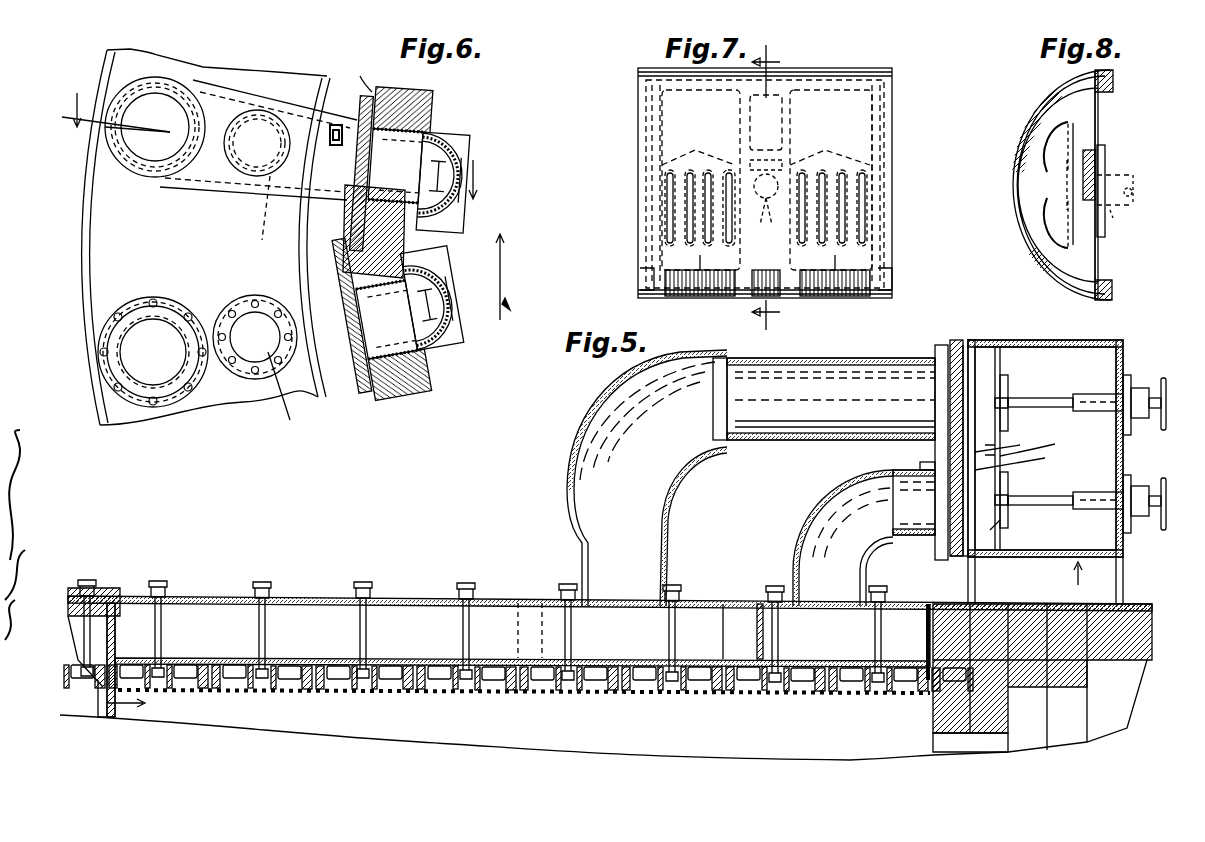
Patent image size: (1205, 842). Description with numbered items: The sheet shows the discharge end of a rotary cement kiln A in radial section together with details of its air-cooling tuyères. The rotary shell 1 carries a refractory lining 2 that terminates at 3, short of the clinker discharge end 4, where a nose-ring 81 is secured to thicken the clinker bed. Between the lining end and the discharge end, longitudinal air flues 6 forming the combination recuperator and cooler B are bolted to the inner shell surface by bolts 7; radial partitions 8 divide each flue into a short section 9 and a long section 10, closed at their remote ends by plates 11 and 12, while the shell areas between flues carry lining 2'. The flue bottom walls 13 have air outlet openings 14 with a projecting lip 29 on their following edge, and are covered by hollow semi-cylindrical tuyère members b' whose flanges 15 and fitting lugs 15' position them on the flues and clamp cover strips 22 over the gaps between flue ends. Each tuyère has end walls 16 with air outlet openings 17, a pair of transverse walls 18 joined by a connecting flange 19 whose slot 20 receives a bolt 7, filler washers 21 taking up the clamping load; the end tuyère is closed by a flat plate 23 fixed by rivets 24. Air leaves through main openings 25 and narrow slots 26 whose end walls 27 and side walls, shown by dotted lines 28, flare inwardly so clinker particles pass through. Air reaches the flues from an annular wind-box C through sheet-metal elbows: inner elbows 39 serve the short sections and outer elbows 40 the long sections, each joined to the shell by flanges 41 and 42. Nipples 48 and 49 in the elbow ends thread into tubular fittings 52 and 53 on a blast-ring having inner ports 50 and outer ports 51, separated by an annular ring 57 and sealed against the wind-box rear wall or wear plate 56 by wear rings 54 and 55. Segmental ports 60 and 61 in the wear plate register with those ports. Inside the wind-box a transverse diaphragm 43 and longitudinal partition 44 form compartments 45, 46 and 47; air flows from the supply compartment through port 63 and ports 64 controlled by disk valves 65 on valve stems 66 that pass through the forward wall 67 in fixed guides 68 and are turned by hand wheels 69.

In FIG. 6, the rotary shell 1 is at (365, 75).
In FIG. 5, the rotary shell 1 is at (1140, 600).
In FIG. 5, the lining 2 is at (1083, 705).
In FIG. 6, the lining 2' is at (395, 252).
In FIG. 5, the end of lining 3 is at (933, 725).
In FIG. 5, the clinker discharge end 4 is at (110, 712).
In FIG. 6, the air flues 6 is at (352, 235).
In FIG. 5, the air flues 6 is at (410, 668).
In FIG. 6, the bolts 7 is at (378, 220).
In FIG. 7, the bolts 7 is at (765, 234).
In FIG. 8, the bolts 7 is at (1122, 232).
In FIG. 5, the bolts 7 is at (258, 632).
In FIG. 7, the radial partitions 8 is at (771, 194).
In FIG. 5, the radial partitions 8 is at (730, 633).
In FIG. 5, the short flue sections 9 is at (770, 664).
In FIG. 5, the long flue sections 10 is at (698, 664).
In FIG. 5, the plate 11 is at (928, 635).
In FIG. 5, the plate 12 is at (130, 634).
In FIG. 5, the bottom walls 13 is at (440, 630).
In FIG. 6, the air outlet openings 14 is at (467, 160).
In FIG. 7, the flanges 15 is at (765, 170).
In FIG. 8, the flanges 15 is at (1085, 178).
In FIG. 8, the fitting lugs 15' is at (1133, 181).
In FIG. 6, the end walls 16 is at (463, 203).
In FIG. 7, the end walls 16 is at (652, 150).
In FIG. 8, the end walls 16 is at (1068, 110).
In FIG. 5, the end walls 16 is at (190, 690).
In FIG. 6, the air outlet openings 17 is at (440, 228).
In FIG. 8, the air outlet openings 17 is at (1052, 185).
In FIG. 7, the transverse walls 18 is at (740, 128).
In FIG. 8, the transverse walls 18 is at (1098, 120).
In FIG. 5, the transverse walls 18 is at (478, 664).
In FIG. 7, the connecting flange 19 is at (766, 132).
In FIG. 8, the connecting flange 19 is at (1100, 140).
In FIG. 7, the slot 20 is at (766, 219).
In FIG. 8, the slot 20 is at (1082, 190).
In FIG. 8, the filler washers 21 is at (1100, 168).
In FIG. 5, the filler washers 21 is at (400, 664).
In FIG. 6, the cover strips 22 is at (465, 145).
In FIG. 5, the cover strips 22 is at (235, 662).
In FIG. 6, the flat plate 23 is at (467, 150).
In FIG. 5, the flat plate 23 is at (930, 705).
In FIG. 6, the rivets 24 is at (394, 242).
In FIG. 7, the openings 25 is at (693, 270).
In FIG. 8, the openings 25 is at (1075, 288).
In FIG. 5, the openings 25 is at (300, 672).
In FIG. 6, the narrow slots 26 is at (460, 193).
In FIG. 7, the narrow slots 26 is at (731, 226).
In FIG. 8, the narrow slots 26 is at (1025, 228).
In FIG. 5, the narrow slots 26 is at (345, 690).
In FIG. 8, the end walls of slots 27 is at (1020, 185).
In FIG. 7, the dotted lines 28 is at (766, 154).
In FIG. 6, the projecting lip 29 is at (477, 177).
In FIG. 6, the inner elbows 39 is at (257, 110).
In FIG. 5, the inner elbows 39 is at (795, 548).
In FIG. 6, the outer elbows 40 is at (140, 175).
In FIG. 5, the outer elbows 40 is at (600, 415).
In FIG. 5, the collar or flange 41 is at (760, 600).
In FIG. 5, the collar or flange 42 is at (680, 603).
In FIG. 5, the transverse diaphragm 43 is at (1003, 440).
In FIG. 5, the longitudinal partition 44 is at (1035, 441).
In FIG. 5, the air supply compartment 45 is at (1060, 360).
In FIG. 5, the inner compartment 46 is at (990, 560).
In FIG. 5, the outer compartment 47 is at (985, 360).
In FIG. 6, the nipples 48 is at (265, 208).
In FIG. 5, the nipples 48 is at (915, 468).
In FIG. 6, the nipples 49 is at (160, 85).
In FIG. 5, the nipples 49 is at (825, 358).
In FIG. 6, the inner ports 50 is at (285, 396).
In FIG. 5, the inner ports 50 is at (900, 510).
In FIG. 6, the outer ports 51 is at (180, 367).
In FIG. 5, the outer ports 51 is at (945, 412).
In FIG. 6, the tubular fitting 52 is at (232, 300).
In FIG. 5, the tubular fitting 52 is at (935, 548).
In FIG. 6, the tubular fitting 53 is at (120, 318).
In FIG. 5, the tubular fitting 53 is at (940, 350).
In FIG. 5, the wear ring 54 is at (958, 560).
In FIG. 5, the wear ring 55 is at (956, 340).
In FIG. 5, the rear wall or wear plate 56 is at (1020, 460).
In FIG. 5, the annular ring 57 is at (983, 435).
In FIG. 5, the segmental port 60 is at (890, 525).
In FIG. 5, the segmental port 61 is at (945, 392).
In FIG. 5, the port 63 is at (985, 380).
In FIG. 5, the ports 64 is at (995, 528).
In FIG. 5, the disk valves 65 is at (1008, 390).
In FIG. 5, the valve stems 66 is at (1050, 398).
In FIG. 5, the forward wall 67 is at (1130, 382).
In FIG. 5, the fixed guides 68 is at (1145, 388).
In FIG. 5, the hand wheels 69 is at (1165, 478).
In FIG. 5, the nose-ring 81 is at (80, 620).
In FIG. 5, the kiln A is at (90, 576).
In FIG. 5, the combination recuperator and cooler B is at (80, 672).
In FIG. 6, the annular wind-box C is at (92, 237).
In FIG. 5, the annular wind-box C is at (1075, 583).
In FIG. 6, the tuyère members b' is at (447, 262).
In FIG. 7, the tuyère members b' is at (618, 130).
In FIG. 8, the tuyère members b' is at (1008, 129).
In FIG. 5, the tuyère members b' is at (561, 707).